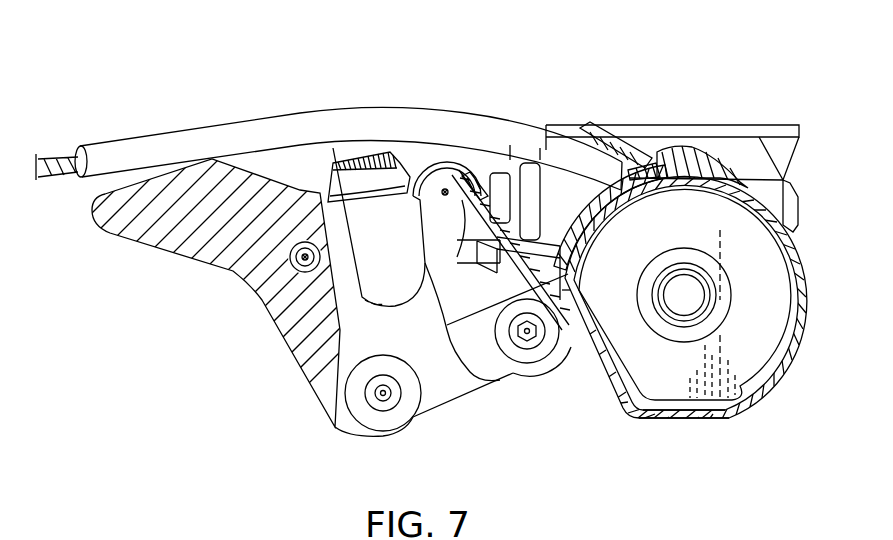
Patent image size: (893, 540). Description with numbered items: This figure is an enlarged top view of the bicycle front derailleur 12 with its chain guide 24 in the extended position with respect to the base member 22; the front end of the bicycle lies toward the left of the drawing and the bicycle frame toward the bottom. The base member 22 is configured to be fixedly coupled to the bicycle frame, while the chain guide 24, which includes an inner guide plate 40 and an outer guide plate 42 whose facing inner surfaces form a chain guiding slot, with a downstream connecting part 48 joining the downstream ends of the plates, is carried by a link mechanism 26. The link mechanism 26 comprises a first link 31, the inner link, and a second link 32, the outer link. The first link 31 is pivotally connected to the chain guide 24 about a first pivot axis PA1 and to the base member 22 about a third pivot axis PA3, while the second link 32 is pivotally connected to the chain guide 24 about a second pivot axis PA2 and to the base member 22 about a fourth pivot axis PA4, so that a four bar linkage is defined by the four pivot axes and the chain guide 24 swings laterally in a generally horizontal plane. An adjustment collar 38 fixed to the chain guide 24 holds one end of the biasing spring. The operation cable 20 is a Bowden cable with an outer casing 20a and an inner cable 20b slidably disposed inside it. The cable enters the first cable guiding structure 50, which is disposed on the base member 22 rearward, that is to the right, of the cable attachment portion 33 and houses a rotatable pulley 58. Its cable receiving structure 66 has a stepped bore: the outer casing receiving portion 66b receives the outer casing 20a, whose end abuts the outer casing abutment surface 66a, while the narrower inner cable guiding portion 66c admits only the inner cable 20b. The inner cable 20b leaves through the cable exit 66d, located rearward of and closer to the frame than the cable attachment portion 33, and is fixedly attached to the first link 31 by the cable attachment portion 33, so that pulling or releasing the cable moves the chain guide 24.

The bicycle front derailleur 12 is at (210, 40).
The operation cable 20 is at (140, 92).
The outer casing 20a is at (116, 146).
The inner cable 20b is at (53, 158).
The base member 22 is at (157, 256).
The chain guide 24 is at (709, 122).
The link mechanism 26 is at (442, 418).
The first link 31 is at (490, 388).
The second link 32 is at (417, 180).
The cable attachment portion 33 is at (373, 153).
The adjustment collar 38 is at (565, 372).
The inner guide plate 40 is at (600, 234).
The outer guide plate 42 is at (752, 124).
The downstream connecting part 48 is at (518, 168).
The first cable guiding structure 50 is at (771, 404).
The rotatable pulley 58 is at (648, 418).
The cable receiving structure 66 is at (620, 133).
The outer casing abutment surface 66a is at (662, 160).
The outer casing receiving portion 66b is at (607, 127).
The inner cable guiding portion 66c is at (657, 163).
The cable exit 66d is at (583, 287).
The first pivot axis PA1 is at (527, 338).
The second pivot axis PA2 is at (438, 200).
The third pivot axis PA3 is at (381, 398).
The fourth pivot axis PA4 is at (318, 257).